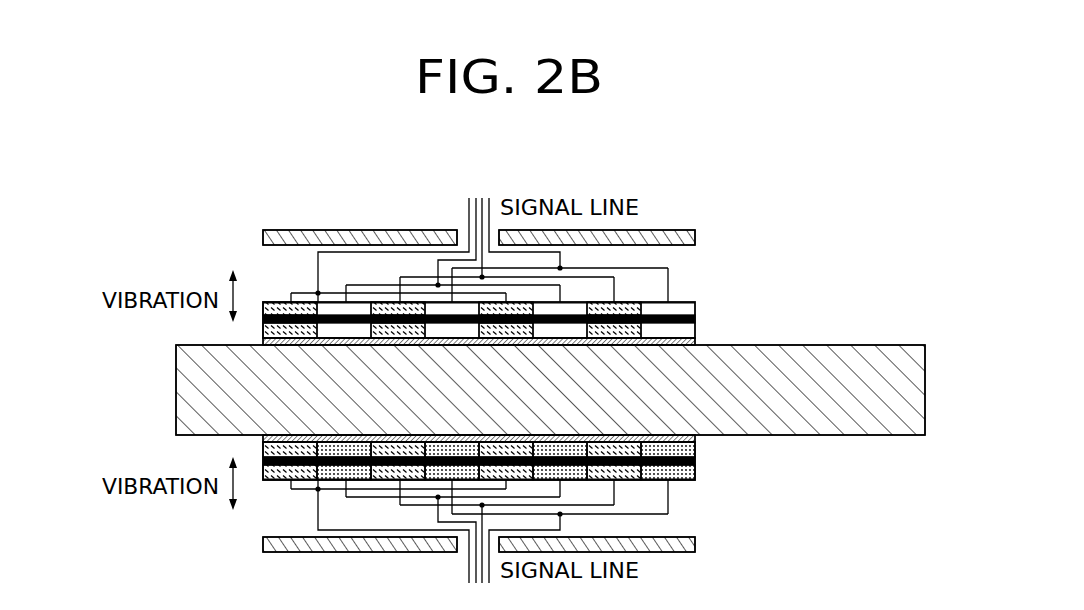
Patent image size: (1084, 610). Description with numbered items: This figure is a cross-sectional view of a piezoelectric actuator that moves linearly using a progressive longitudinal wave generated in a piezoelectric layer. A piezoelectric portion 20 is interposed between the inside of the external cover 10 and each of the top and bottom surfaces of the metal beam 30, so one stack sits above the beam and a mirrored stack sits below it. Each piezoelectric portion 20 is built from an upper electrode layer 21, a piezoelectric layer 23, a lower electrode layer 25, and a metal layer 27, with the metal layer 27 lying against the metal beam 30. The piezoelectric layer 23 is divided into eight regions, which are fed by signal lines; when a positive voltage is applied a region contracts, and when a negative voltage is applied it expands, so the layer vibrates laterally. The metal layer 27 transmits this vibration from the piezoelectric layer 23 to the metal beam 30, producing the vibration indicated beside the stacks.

The external cover 10 is at (696, 239).
The piezoelectric portion 20 is at (533, 390).
The upper electrode layer 21 is at (763, 333).
The piezoelectric layer 23 is at (697, 309).
The lower electrode layer 25 is at (697, 320).
The metal layer 27 is at (697, 342).
The metal beam 30 is at (878, 346).